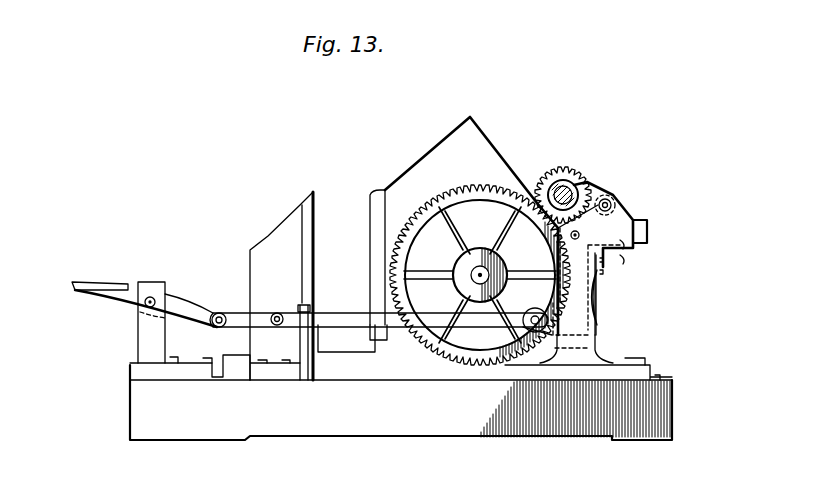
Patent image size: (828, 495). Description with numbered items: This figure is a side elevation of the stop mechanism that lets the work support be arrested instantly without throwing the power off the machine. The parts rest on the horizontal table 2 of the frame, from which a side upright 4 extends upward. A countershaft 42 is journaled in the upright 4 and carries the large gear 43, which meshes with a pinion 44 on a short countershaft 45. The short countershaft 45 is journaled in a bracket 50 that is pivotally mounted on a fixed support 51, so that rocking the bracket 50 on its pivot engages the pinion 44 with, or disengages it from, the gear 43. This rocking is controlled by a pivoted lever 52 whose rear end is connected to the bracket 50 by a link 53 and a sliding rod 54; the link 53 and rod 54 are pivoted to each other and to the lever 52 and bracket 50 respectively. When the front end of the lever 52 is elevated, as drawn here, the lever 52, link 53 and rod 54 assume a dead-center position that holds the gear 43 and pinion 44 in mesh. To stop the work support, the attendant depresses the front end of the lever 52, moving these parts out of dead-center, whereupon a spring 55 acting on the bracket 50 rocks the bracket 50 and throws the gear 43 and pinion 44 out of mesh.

The horizontal table 2 is at (133, 413).
The side upright 4 is at (498, 167).
The countershaft 42 is at (474, 272).
The gear 43 is at (458, 188).
The pinion 44 is at (565, 168).
The short countershaft 45 is at (577, 192).
The bracket 50 is at (650, 215).
The fixed support 51 is at (621, 257).
The pivoted lever 52 is at (183, 313).
The link 53 is at (256, 318).
The sliding rod 54 is at (342, 317).
The spring 55 is at (606, 297).